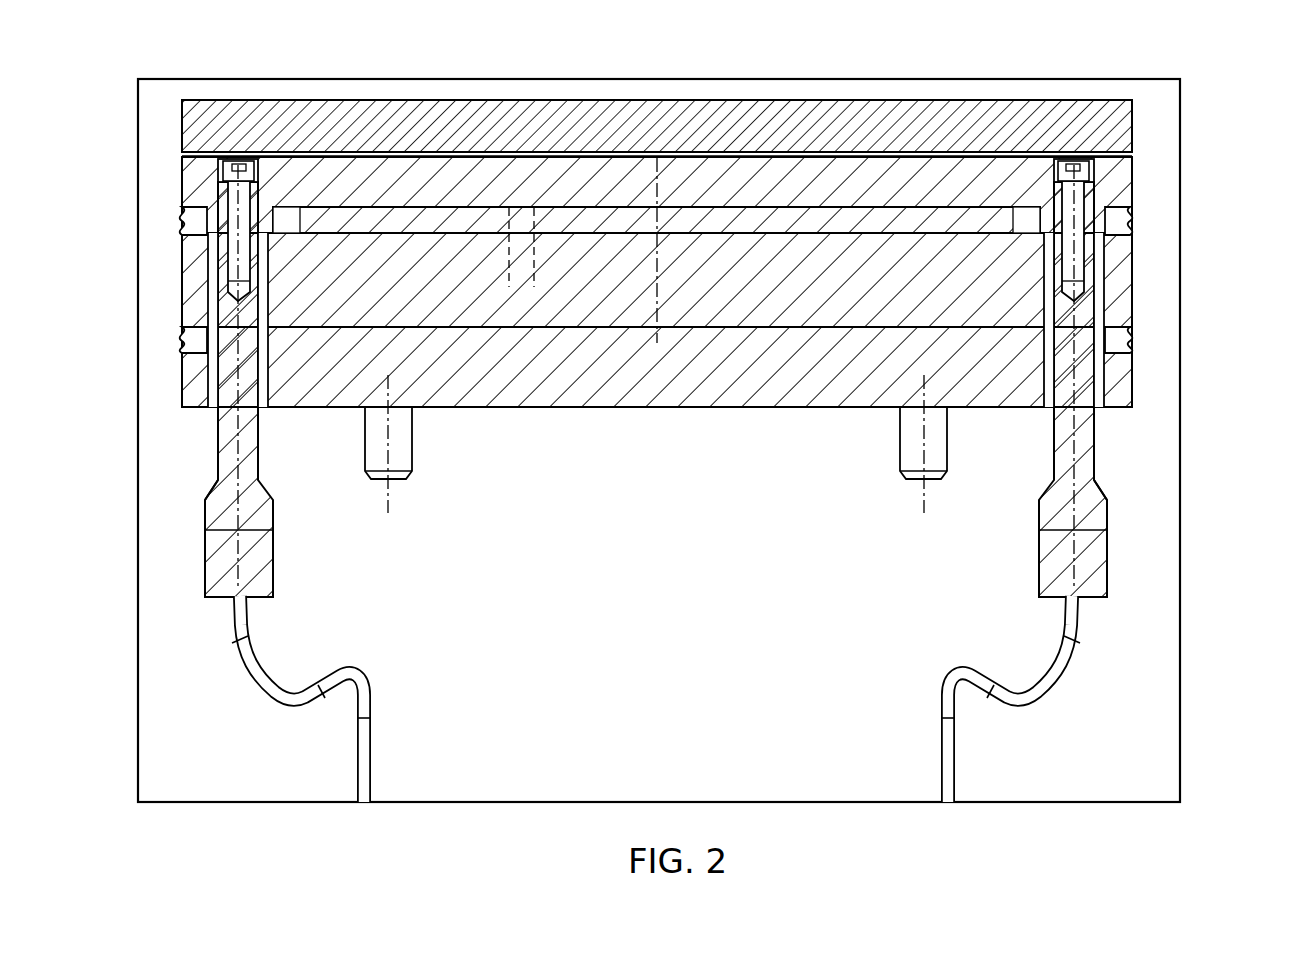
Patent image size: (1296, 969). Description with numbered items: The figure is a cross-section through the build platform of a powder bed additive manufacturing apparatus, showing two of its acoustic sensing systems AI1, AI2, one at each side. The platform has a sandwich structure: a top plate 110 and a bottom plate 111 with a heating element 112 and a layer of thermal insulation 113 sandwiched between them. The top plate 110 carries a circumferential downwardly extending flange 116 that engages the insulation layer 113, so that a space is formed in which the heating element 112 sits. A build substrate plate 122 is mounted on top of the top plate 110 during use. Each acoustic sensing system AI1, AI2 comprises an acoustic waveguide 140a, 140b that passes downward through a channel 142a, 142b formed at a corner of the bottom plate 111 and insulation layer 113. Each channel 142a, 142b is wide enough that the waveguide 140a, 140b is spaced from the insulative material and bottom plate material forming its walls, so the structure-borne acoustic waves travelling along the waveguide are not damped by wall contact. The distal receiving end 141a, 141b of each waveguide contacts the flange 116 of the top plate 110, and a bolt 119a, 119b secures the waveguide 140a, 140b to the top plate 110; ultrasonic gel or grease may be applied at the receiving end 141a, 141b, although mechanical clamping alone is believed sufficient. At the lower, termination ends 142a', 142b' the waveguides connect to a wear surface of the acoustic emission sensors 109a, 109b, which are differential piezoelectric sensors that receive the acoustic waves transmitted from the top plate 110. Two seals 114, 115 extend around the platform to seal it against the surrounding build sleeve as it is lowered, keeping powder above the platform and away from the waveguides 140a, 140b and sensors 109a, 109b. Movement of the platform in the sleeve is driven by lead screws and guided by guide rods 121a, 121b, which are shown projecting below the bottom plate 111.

The acoustic emission sensor 109a is at (268, 564).
The acoustic emission sensor 109b is at (1050, 565).
The top plate 110 is at (780, 168).
The bottom plate 111 is at (790, 380).
The heating element 112 is at (910, 213).
The layer of thermal insulation 113 is at (578, 297).
The seal 114 is at (181, 218).
The seal 115 is at (182, 348).
The circumferential downwardly extending flange 116 is at (1098, 204).
The bolt 119a is at (246, 158).
The bolt 119b is at (1086, 157).
The guide rod 121a is at (414, 463).
The guide rod 121b is at (912, 466).
The build substrate plate 122 is at (1134, 104).
The acoustic waveguide 140a is at (257, 440).
The acoustic waveguide 140b is at (1060, 435).
The receiving end 141a is at (215, 238).
The receiving end 141b is at (1098, 238).
The channel 142a is at (161, 320).
The channel 142b is at (1154, 320).
The insulator chamfer 142a' is at (129, 538).
The insulator chamfer 142b' is at (1134, 560).
The acoustic sensing system AI1 is at (183, 452).
The acoustic sensing system AI2 is at (1137, 457).